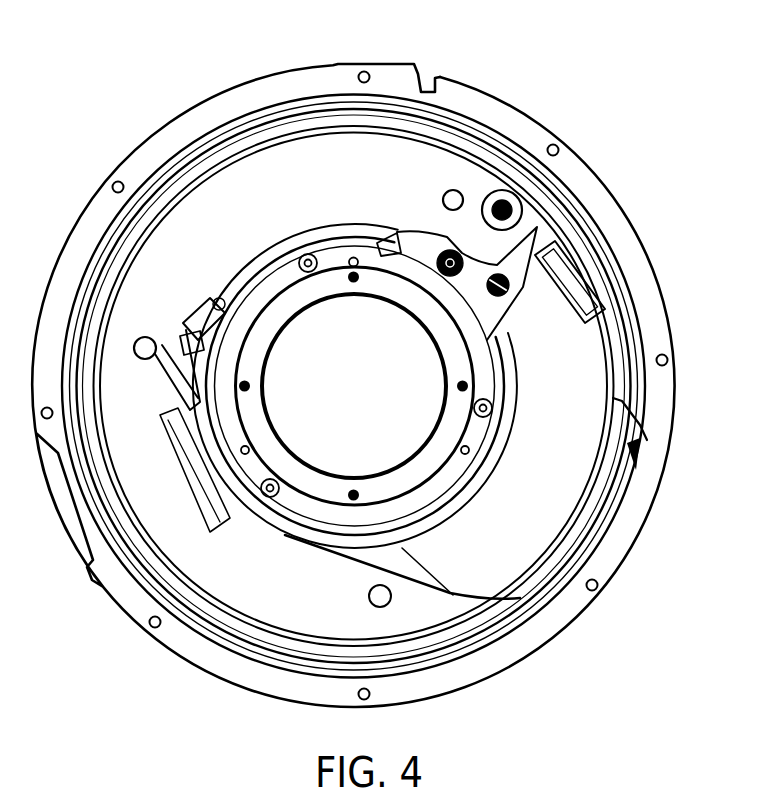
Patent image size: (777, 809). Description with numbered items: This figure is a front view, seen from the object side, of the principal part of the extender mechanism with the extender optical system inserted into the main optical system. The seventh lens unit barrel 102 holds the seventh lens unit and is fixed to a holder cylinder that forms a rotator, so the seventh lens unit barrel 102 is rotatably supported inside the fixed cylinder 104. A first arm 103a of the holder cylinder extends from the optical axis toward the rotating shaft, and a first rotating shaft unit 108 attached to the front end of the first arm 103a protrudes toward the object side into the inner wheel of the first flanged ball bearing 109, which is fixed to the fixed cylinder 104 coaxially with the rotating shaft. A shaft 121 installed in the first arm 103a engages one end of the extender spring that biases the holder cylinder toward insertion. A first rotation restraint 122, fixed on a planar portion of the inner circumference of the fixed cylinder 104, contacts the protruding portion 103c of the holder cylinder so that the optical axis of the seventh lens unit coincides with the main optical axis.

The seventh lens unit barrel 102 is at (455, 463).
The first arm 103a is at (484, 307).
The protruding portion 103c is at (215, 375).
The fixed cylinder 104 is at (497, 118).
The first rotating shaft unit 108 is at (500, 208).
The first flanged ball bearing 109 is at (517, 208).
The shaft 121 is at (498, 272).
The first rotation restraint 122 is at (204, 312).